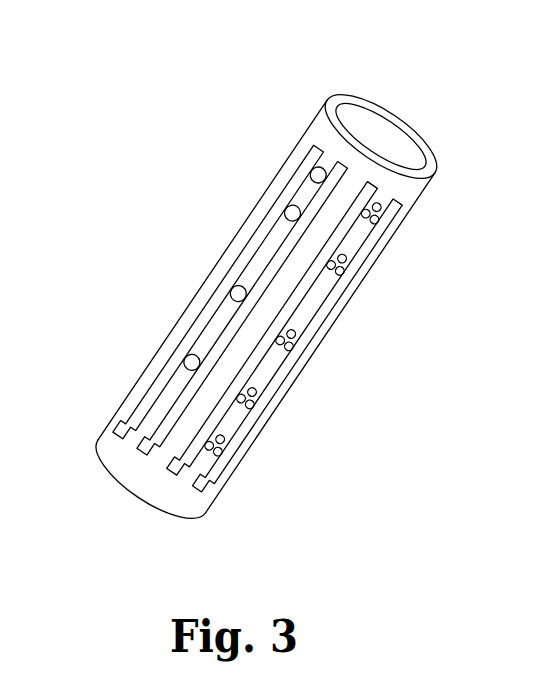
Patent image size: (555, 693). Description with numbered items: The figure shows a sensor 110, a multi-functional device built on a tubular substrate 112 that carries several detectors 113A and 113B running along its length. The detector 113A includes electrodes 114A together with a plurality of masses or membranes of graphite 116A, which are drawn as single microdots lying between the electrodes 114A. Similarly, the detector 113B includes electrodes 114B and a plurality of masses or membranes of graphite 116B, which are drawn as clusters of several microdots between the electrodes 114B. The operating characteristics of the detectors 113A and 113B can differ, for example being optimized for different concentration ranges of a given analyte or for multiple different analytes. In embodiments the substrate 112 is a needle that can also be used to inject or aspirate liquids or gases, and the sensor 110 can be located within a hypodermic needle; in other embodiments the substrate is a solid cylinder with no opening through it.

The sensor 110 is at (441, 72).
The tubular substrate 112 is at (303, 151).
The detector 113A is at (186, 335).
The detector 113B is at (318, 336).
The electrodes 114A is at (147, 408).
The electrodes 114B is at (305, 292).
The membranes of graphite 116A is at (282, 208).
The membranes of graphite 116B is at (270, 398).